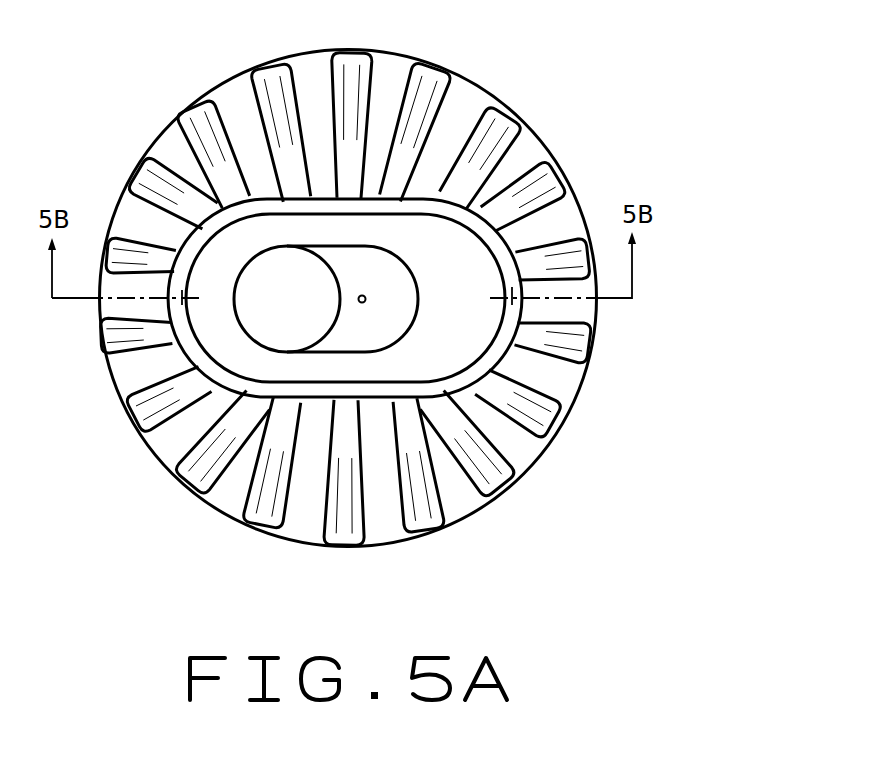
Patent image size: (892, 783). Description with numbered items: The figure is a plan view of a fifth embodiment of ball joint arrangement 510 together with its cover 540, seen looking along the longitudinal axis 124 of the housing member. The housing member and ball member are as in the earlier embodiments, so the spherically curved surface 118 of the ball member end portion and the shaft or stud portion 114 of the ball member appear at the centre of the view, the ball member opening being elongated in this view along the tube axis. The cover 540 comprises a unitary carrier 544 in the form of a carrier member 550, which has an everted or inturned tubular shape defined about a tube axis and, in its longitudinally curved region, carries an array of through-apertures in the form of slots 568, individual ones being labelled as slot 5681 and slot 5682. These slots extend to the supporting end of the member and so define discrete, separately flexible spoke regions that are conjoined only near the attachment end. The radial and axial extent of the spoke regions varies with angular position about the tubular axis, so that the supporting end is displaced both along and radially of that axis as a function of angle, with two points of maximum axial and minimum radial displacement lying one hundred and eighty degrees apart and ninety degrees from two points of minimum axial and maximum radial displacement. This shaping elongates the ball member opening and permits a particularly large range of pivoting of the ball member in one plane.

The ball joint arrangement 510 is at (409, 295).
The cover 540 is at (383, 298).
The unitary carrier 544 is at (502, 495).
The carrier member 550 is at (453, 483).
The slots 568 is at (546, 160).
The slot 5681 is at (553, 268).
The slot 5682 is at (512, 203).
The spherically curved surface 118 is at (462, 352).
The shaft or stud portion 114 is at (348, 263).
The longitudinal axis 124 is at (366, 300).